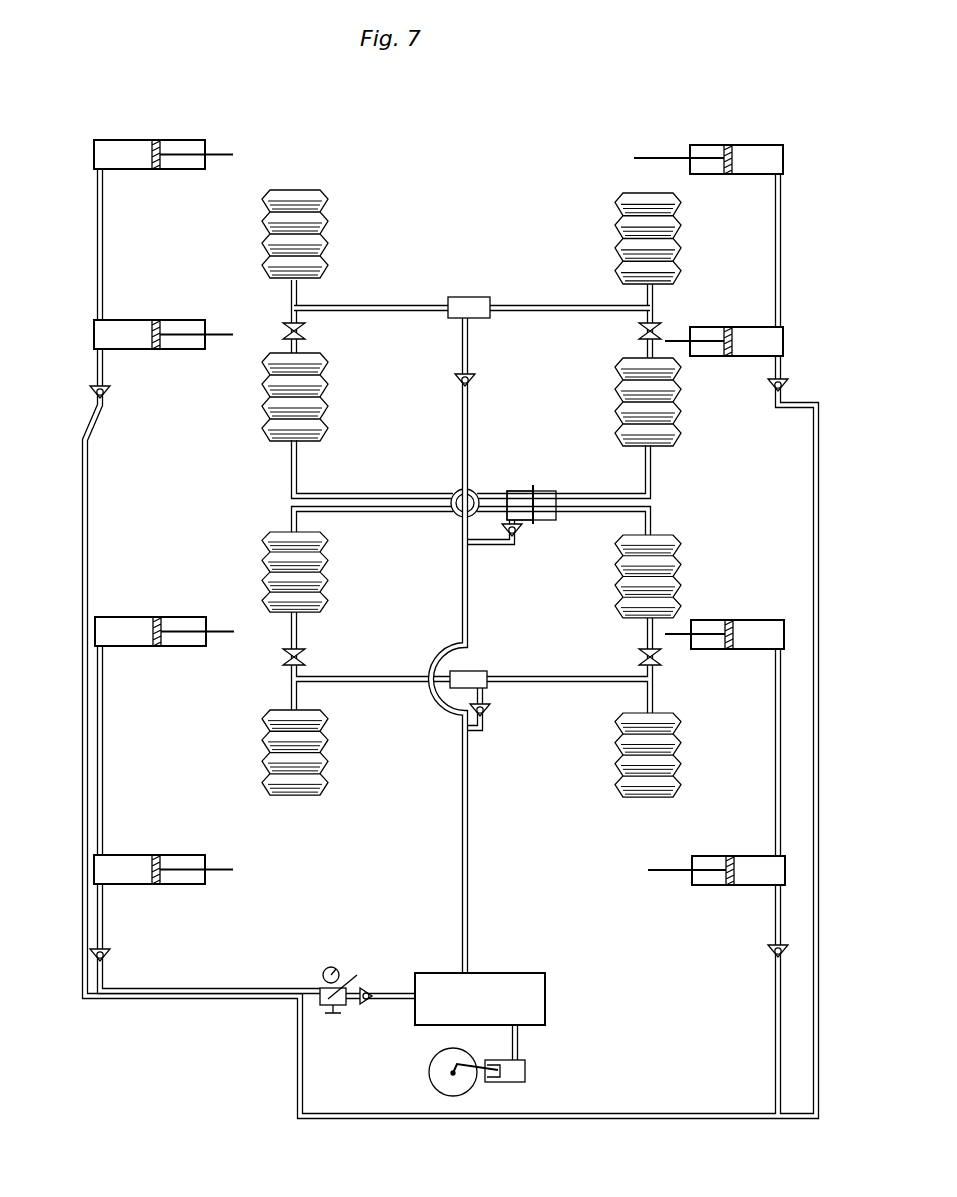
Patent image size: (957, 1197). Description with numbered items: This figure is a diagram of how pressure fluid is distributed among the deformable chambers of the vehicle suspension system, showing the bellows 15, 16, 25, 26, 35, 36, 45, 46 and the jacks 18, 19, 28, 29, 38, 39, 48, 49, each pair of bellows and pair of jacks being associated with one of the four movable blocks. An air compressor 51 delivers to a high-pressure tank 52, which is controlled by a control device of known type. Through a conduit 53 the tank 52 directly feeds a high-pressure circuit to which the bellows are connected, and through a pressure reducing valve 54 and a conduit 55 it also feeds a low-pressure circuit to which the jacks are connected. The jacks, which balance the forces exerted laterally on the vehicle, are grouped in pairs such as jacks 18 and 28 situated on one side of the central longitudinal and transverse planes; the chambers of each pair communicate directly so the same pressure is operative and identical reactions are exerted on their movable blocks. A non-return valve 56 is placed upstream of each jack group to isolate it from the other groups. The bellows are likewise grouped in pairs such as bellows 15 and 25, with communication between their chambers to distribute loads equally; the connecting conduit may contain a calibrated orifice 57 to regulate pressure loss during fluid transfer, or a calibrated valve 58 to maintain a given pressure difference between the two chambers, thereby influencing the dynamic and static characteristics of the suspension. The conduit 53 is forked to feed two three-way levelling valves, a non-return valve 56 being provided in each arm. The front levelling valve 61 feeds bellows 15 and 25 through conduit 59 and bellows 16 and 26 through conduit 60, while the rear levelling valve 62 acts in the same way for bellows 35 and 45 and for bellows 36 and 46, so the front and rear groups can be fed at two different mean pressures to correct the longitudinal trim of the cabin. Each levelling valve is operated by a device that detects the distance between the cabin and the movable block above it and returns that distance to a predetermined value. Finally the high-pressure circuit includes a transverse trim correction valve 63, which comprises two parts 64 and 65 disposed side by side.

The bellows 15 is at (330, 230).
The bellows 16 is at (614, 240).
The bellows 25 is at (330, 402).
The bellows 26 is at (614, 408).
The bellows 35 is at (330, 578).
The bellows 36 is at (614, 592).
The bellows 45 is at (330, 748).
The bellows 46 is at (614, 766).
The jack 18 is at (176, 140).
The jack 19 is at (712, 145).
The jack 28 is at (176, 320).
The jack 29 is at (710, 327).
The jack 38 is at (160, 617).
The jack 39 is at (736, 620).
The jack 48 is at (132, 855).
The jack 49 is at (724, 856).
The air compressor 51 is at (527, 1072).
The high-pressure tank 52 is at (512, 975).
The conduit 53 is at (469, 878).
The pressure reducing valve 54 is at (348, 982).
The conduit 55 is at (235, 990).
The non-return valve 56 is at (112, 392).
The calibrated orifice 57 is at (306, 657).
The calibrated valve 58 is at (306, 331).
The conduit 59 is at (396, 305).
The conduit 60 is at (560, 305).
The front levelling valve 61 is at (474, 297).
The rear levelling valve 62 is at (472, 671).
The transverse trim correction valve 63 is at (540, 491).
The part of transverse trim correction valve 64 is at (557, 518).
The part of transverse trim correction valve 65 is at (514, 490).